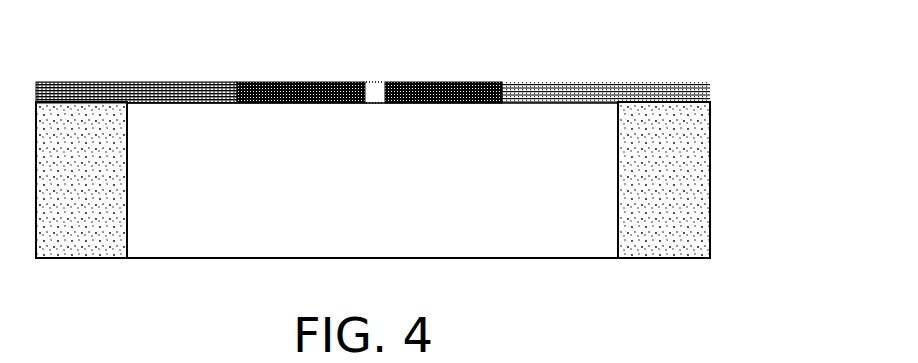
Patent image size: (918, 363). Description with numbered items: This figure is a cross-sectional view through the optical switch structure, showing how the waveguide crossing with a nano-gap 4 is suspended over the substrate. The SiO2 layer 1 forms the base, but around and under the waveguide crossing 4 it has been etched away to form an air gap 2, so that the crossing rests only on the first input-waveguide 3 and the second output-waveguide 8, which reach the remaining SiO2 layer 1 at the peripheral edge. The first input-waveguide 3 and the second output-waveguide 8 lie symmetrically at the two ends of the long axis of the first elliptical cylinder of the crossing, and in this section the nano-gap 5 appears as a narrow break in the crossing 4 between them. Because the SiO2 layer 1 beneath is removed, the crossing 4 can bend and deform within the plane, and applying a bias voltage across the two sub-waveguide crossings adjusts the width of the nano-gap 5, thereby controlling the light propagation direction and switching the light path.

The SiO2 layer 1 is at (688, 150).
The air gap 2 is at (598, 233).
The first input-waveguide 3 is at (193, 88).
The waveguide crossing with a nano-gap 4 is at (423, 88).
The nano-gap 5 is at (380, 95).
The second output-waveguide 8 is at (573, 98).